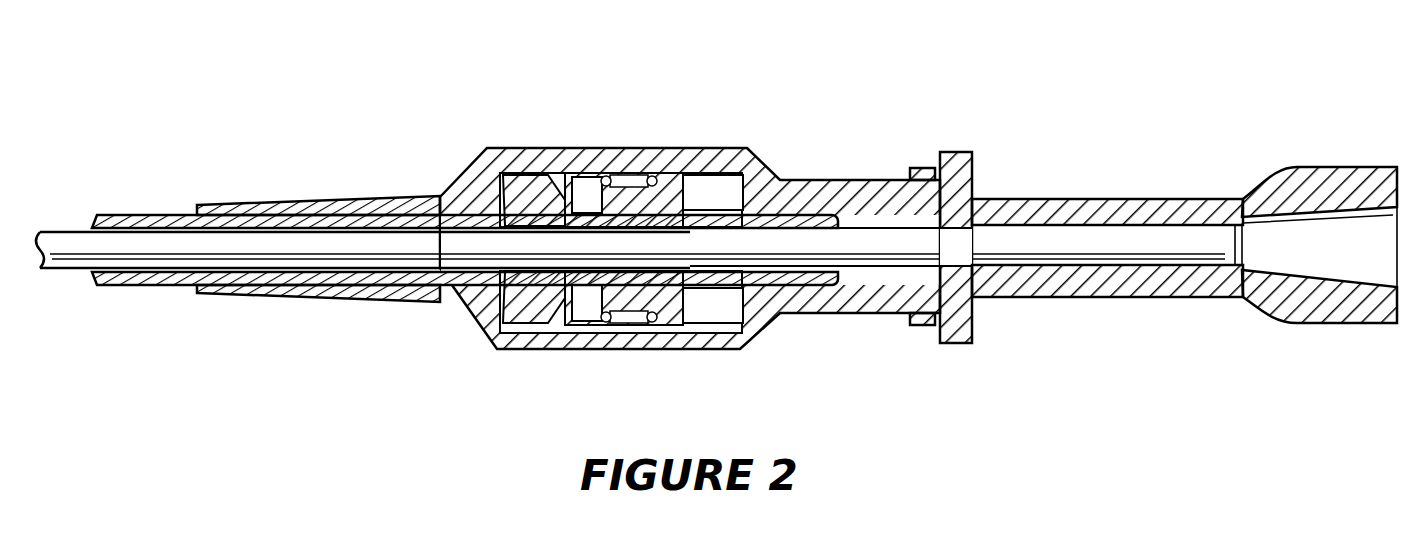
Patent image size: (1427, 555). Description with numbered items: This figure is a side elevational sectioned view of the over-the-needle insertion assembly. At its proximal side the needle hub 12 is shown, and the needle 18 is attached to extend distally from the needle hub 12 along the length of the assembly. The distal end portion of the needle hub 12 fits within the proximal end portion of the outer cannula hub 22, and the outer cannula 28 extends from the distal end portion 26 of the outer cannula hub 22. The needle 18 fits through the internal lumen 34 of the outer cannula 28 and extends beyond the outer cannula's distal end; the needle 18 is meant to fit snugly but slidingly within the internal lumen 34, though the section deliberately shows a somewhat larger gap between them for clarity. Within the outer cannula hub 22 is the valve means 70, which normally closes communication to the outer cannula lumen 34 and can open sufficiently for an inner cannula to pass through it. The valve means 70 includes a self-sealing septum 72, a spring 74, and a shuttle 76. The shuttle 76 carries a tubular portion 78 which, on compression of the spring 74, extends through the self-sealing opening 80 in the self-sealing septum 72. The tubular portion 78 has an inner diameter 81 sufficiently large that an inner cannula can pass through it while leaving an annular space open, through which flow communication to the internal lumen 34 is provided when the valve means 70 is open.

The needle hub 12 is at (1095, 199).
The needle 18 is at (62, 232).
The outer cannula hub 22 is at (605, 150).
The distal end portion 26 is at (305, 200).
The outer cannula 28 is at (157, 203).
The internal lumen 34 is at (133, 276).
The valve means 70 is at (545, 127).
The self-sealing septum 72 is at (510, 208).
The spring 74 is at (647, 350).
The shuttle 76 is at (672, 173).
The tubular portion 78 is at (543, 345).
The self-sealing opening 80 is at (446, 276).
The inner diameter 81 is at (663, 276).